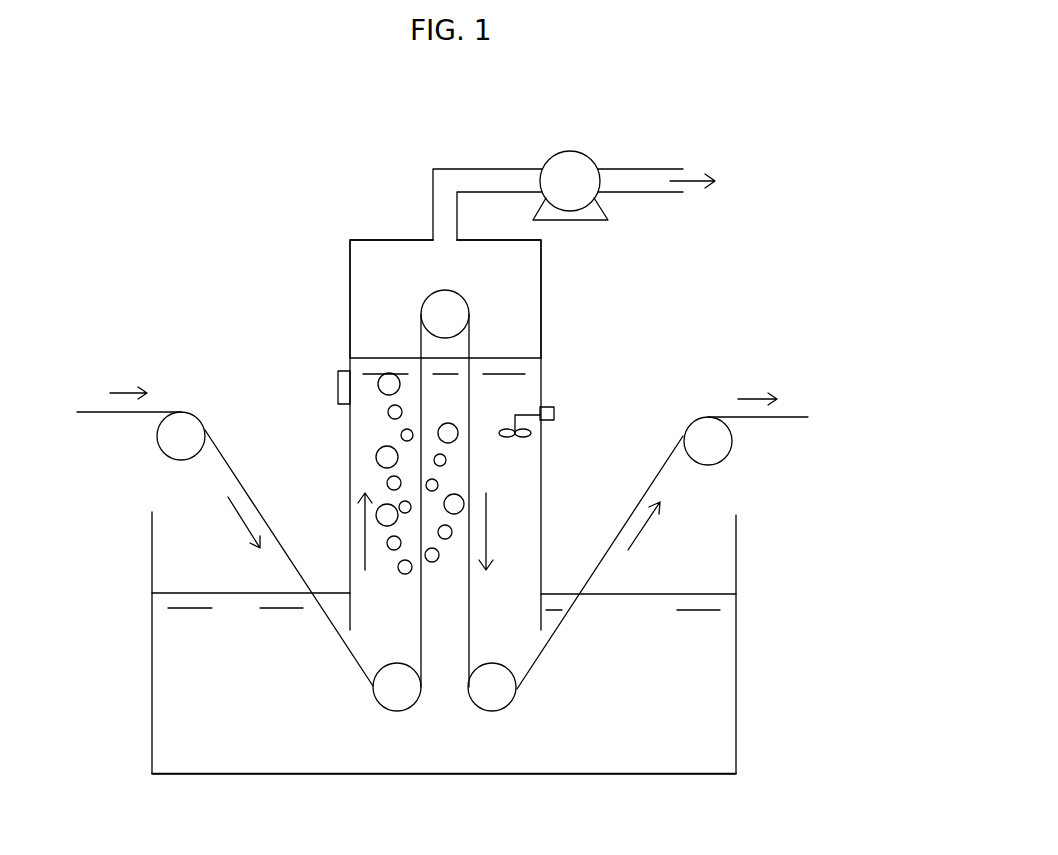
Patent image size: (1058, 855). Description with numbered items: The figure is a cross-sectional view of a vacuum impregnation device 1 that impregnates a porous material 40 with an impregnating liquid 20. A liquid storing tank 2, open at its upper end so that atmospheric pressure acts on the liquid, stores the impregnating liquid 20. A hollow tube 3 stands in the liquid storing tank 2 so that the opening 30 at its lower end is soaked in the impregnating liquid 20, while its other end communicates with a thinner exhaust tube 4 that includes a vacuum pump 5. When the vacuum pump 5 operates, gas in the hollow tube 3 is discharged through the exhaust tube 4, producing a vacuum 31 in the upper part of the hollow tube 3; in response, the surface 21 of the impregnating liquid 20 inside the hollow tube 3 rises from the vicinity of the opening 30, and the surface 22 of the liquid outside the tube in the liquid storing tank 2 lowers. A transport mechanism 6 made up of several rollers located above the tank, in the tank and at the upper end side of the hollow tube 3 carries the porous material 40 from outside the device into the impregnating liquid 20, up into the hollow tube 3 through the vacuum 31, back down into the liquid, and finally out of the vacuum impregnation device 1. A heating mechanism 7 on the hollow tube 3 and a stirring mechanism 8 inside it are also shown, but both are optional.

The vacuum impregnation device 1 is at (766, 141).
The liquid storing tank 2 is at (736, 670).
The hollow tube 3 is at (541, 300).
The exhaust tube 4 is at (497, 168).
The vacuum pump 5 is at (570, 152).
The transport mechanism 6 is at (436, 314).
The heating mechanism 7 is at (338, 385).
The stirring mechanism 8 is at (528, 434).
The impregnating liquid 20 is at (710, 771).
The surface of the impregnating liquid in the hollow tube 21 is at (503, 357).
The surface of the impregnating liquid outside the hollow tube 22 is at (182, 591).
The opening 30 is at (527, 642).
The vacuum 31 is at (385, 248).
The porous material 40 is at (90, 411).